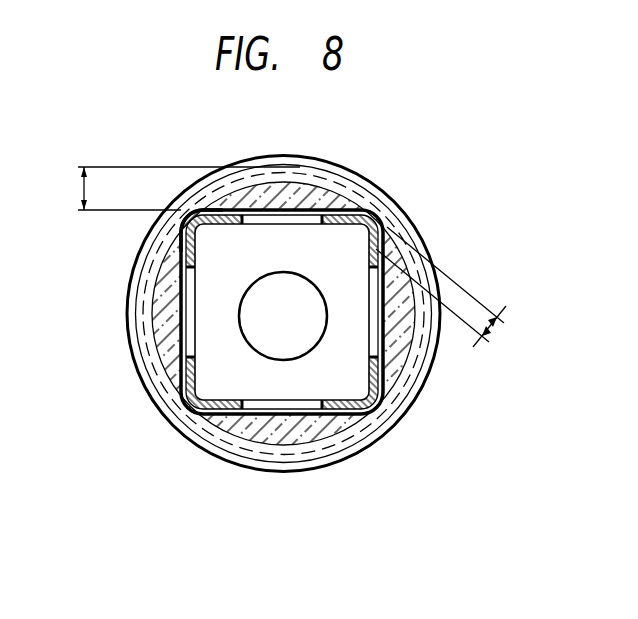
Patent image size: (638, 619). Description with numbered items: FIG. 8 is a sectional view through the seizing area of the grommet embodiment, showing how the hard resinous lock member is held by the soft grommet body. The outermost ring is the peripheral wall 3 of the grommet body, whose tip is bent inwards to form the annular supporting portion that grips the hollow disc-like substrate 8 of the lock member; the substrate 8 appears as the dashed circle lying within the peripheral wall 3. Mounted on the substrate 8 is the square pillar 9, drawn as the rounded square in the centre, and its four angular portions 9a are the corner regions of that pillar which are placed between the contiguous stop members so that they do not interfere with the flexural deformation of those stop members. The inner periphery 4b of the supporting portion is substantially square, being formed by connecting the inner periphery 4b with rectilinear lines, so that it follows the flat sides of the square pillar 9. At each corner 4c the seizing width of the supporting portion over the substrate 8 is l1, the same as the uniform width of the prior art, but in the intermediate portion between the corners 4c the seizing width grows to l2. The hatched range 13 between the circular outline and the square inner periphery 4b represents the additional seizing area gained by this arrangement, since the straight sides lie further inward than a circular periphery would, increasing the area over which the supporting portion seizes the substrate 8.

The peripheral wall 3 is at (386, 171).
The substrate 8 is at (318, 166).
The square pillar 9 is at (367, 218).
The angular portions 9a is at (183, 227).
The inner periphery 4b is at (195, 322).
The corner 4c is at (183, 257).
The range 13 is at (297, 193).
The seizing width at corner l1 is at (496, 343).
The seizing width at intermediate portion l2 is at (77, 192).